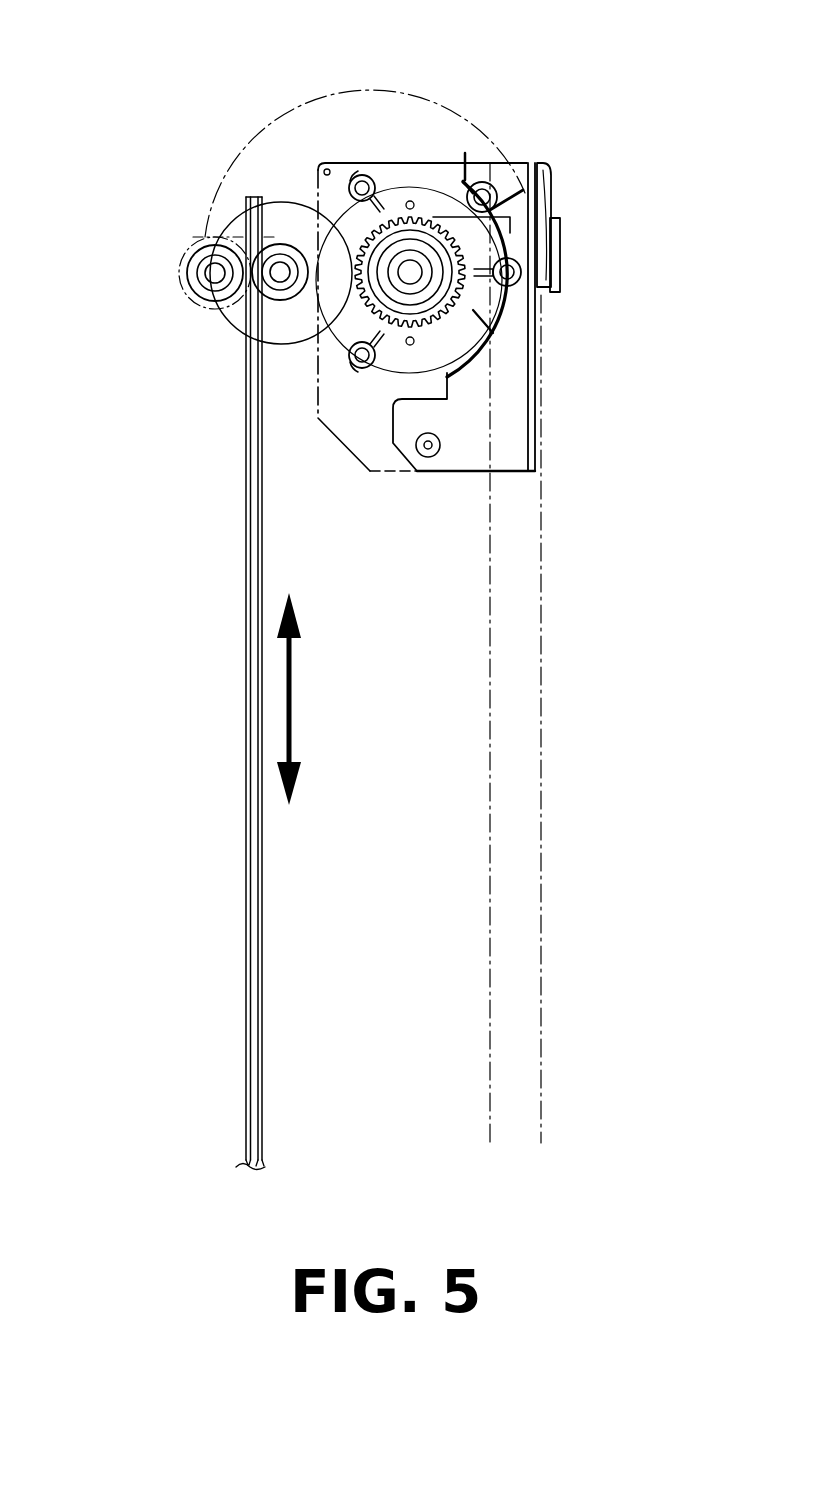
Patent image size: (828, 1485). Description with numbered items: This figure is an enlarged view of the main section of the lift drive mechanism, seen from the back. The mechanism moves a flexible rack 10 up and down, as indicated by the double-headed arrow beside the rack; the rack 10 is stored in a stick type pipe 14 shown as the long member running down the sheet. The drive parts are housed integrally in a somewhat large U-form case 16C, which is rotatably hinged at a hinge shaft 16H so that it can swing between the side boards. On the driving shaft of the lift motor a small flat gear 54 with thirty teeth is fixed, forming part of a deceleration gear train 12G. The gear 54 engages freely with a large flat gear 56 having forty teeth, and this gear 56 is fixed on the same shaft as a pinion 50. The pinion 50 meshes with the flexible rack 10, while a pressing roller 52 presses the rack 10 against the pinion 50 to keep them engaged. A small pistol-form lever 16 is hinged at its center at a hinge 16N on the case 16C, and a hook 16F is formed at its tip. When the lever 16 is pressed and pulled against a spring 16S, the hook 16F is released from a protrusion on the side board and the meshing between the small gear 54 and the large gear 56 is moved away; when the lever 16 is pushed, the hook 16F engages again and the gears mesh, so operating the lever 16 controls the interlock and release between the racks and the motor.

The flexible rack 10 is at (262, 735).
The stick type pipe 14 is at (541, 642).
The lever 16 is at (560, 262).
The U-form case 16C is at (473, 393).
The hook 16F is at (385, 187).
The hinge shaft 16H is at (428, 447).
The hinge 16N is at (485, 182).
The spring 16S is at (512, 208).
The deceleration gear train 12G is at (473, 312).
The pinion 50 is at (278, 252).
The roller 52 is at (200, 282).
The flat gear 54 is at (440, 212).
The flat gear 56 is at (303, 202).